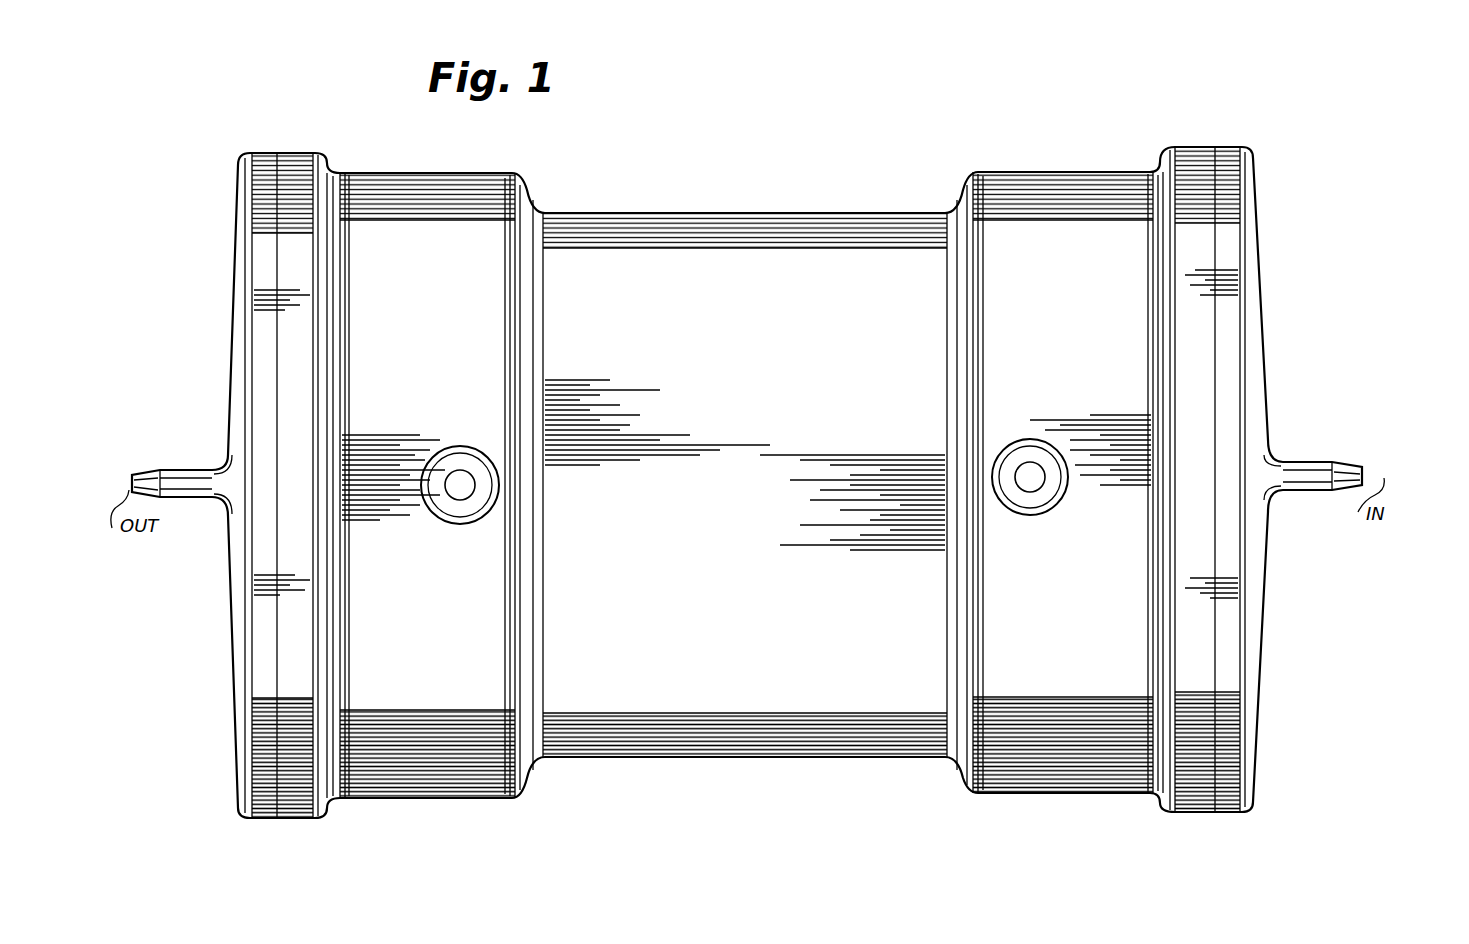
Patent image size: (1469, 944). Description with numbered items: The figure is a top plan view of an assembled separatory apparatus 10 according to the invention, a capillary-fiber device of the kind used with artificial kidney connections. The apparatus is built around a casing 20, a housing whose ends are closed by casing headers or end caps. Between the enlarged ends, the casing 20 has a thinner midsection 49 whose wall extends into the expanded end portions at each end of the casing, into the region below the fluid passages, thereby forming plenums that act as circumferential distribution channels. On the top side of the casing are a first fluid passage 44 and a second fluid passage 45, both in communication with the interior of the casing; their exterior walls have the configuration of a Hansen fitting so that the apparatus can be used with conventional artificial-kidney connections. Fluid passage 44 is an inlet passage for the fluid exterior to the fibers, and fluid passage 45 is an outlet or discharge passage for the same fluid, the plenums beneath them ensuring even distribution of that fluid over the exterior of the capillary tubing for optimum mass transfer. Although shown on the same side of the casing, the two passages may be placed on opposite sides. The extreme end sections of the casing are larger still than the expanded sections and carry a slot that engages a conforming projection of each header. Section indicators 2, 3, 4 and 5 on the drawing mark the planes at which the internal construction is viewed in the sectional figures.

The separatory apparatus 10 is at (642, 192).
The casing 20 is at (797, 232).
The first fluid passage 44 is at (462, 484).
The second fluid passage 45 is at (1034, 474).
The thinner midsection 49 is at (656, 419).
The section line 2- 2 is at (130, 486).
The section line 3- 3 is at (745, 208).
The section line 4- 4 is at (1133, 162).
The section line 5- 5 is at (1228, 140).